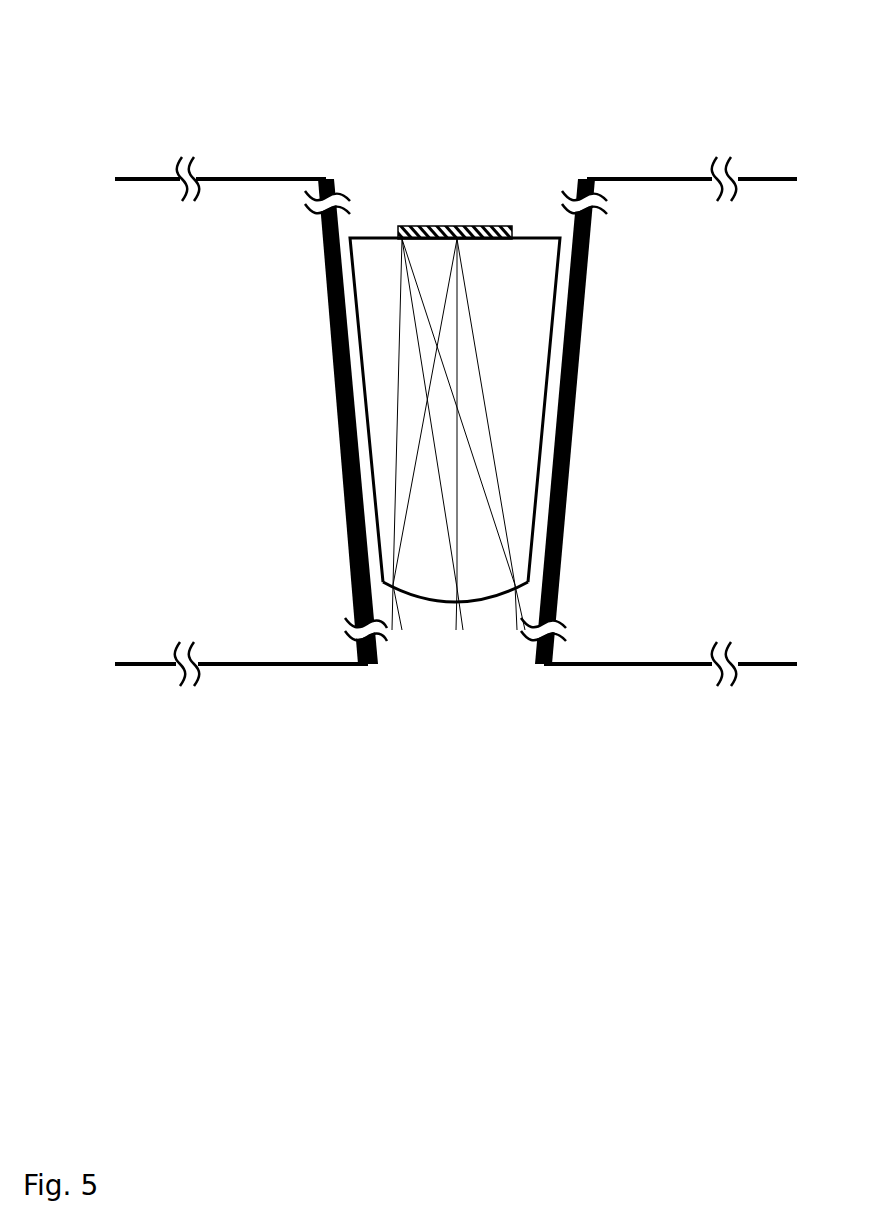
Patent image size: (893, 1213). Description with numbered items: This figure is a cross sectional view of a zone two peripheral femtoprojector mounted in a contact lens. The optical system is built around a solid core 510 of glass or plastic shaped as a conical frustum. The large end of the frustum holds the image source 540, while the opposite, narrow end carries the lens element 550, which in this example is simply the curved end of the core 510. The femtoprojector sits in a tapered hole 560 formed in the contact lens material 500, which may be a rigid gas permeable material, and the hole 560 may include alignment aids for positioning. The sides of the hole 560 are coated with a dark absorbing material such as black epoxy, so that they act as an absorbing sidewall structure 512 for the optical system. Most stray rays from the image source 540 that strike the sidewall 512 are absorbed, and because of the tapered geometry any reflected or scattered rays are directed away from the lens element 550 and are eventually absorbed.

The contact lens material 500 is at (268, 409).
The solid core 510 is at (523, 325).
The sidewall structure 512 is at (571, 238).
The image source 540 is at (462, 230).
The lens element 550 is at (500, 583).
The tapered hole 560 is at (365, 192).